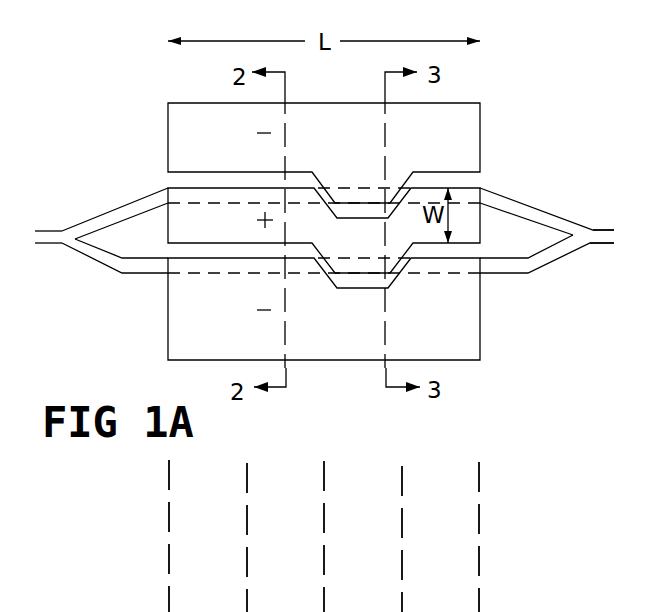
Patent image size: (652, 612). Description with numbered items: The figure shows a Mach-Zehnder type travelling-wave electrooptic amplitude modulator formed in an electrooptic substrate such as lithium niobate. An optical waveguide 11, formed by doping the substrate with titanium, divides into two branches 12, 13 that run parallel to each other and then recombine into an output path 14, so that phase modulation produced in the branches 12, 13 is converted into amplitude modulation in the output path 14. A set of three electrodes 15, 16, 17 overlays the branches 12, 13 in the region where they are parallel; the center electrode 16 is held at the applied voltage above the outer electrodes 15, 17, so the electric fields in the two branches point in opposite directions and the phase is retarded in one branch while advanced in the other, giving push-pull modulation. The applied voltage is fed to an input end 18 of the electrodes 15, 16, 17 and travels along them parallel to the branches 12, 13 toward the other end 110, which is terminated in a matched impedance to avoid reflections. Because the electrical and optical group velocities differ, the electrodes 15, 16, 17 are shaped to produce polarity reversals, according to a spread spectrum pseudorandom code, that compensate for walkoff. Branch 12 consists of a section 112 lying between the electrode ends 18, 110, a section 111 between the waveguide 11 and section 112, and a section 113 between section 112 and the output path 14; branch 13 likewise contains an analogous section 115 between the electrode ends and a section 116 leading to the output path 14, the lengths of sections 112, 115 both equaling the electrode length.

The optical waveguide 11 is at (39, 232).
The branch 12 is at (117, 213).
The branch 13 is at (118, 268).
The output path 14 is at (602, 232).
The electrode 15 is at (352, 139).
The electrode 16 is at (362, 246).
The electrode 17 is at (337, 332).
The input end 18 is at (168, 148).
The end 110 is at (480, 128).
The section 111 is at (136, 206).
The section 112 is at (240, 197).
The section 113 is at (495, 198).
The section 115 is at (228, 265).
The section 116 is at (567, 252).